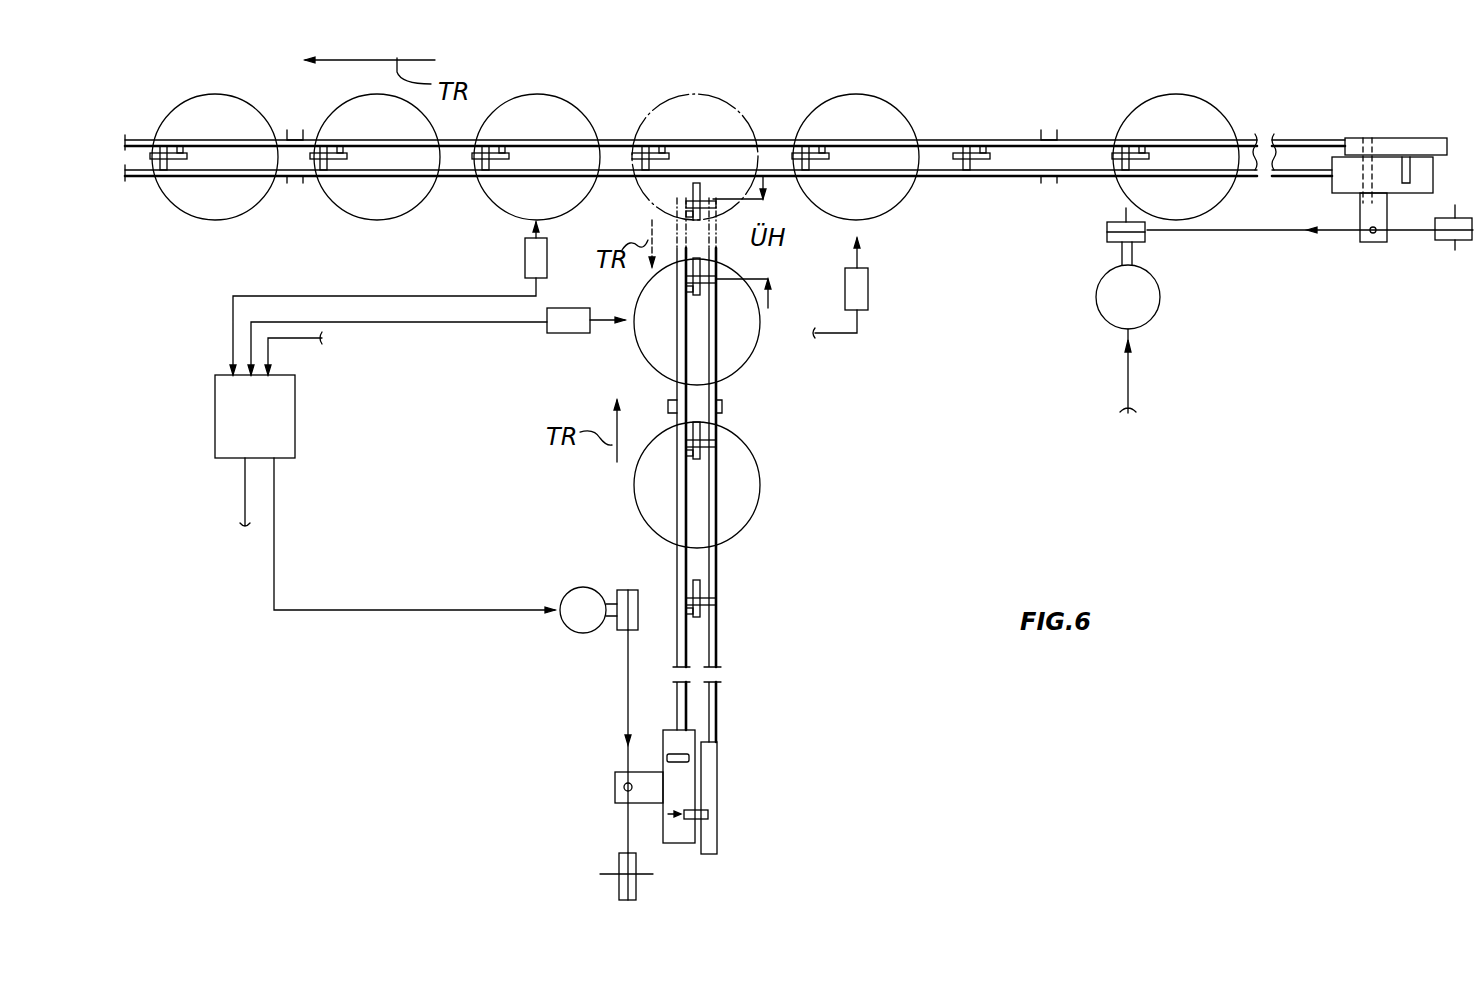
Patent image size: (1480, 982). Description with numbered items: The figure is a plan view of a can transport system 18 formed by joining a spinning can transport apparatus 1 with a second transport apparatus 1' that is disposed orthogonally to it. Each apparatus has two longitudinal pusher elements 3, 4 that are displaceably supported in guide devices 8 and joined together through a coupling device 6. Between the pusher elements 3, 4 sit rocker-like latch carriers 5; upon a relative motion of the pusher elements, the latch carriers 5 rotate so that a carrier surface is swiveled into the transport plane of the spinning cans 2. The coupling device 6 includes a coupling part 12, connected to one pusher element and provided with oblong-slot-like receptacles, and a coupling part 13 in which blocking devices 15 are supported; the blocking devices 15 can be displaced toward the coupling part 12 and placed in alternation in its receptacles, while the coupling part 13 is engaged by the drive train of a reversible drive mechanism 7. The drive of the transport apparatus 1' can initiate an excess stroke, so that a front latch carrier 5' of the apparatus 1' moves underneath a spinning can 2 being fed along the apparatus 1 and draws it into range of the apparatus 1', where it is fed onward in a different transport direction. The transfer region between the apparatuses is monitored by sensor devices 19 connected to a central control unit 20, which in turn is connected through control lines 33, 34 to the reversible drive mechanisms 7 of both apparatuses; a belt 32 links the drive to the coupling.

The spinning can transport apparatus 1 is at (1084, 72).
The transport apparatus 1' is at (780, 621).
The spinning can 2 is at (234, 94).
The pusher element 3 is at (620, 140).
The pusher element 4 is at (598, 178).
The latch carrier 5 is at (649, 336).
The front latch carrier 5' is at (661, 204).
The coupling device 6 is at (1031, 473).
The reversible drive mechanism 7 is at (574, 644).
The guide device 8 is at (1048, 130).
The coupling part 12 is at (720, 831).
The coupling part 13 is at (672, 831).
The blocking device 15 is at (714, 802).
The can transport system 18 is at (905, 372).
The sensor device 19 is at (524, 265).
The central control unit 20 is at (287, 428).
The drive belt 32 is at (626, 700).
The control line 33 is at (443, 610).
The control line 34 is at (244, 507).